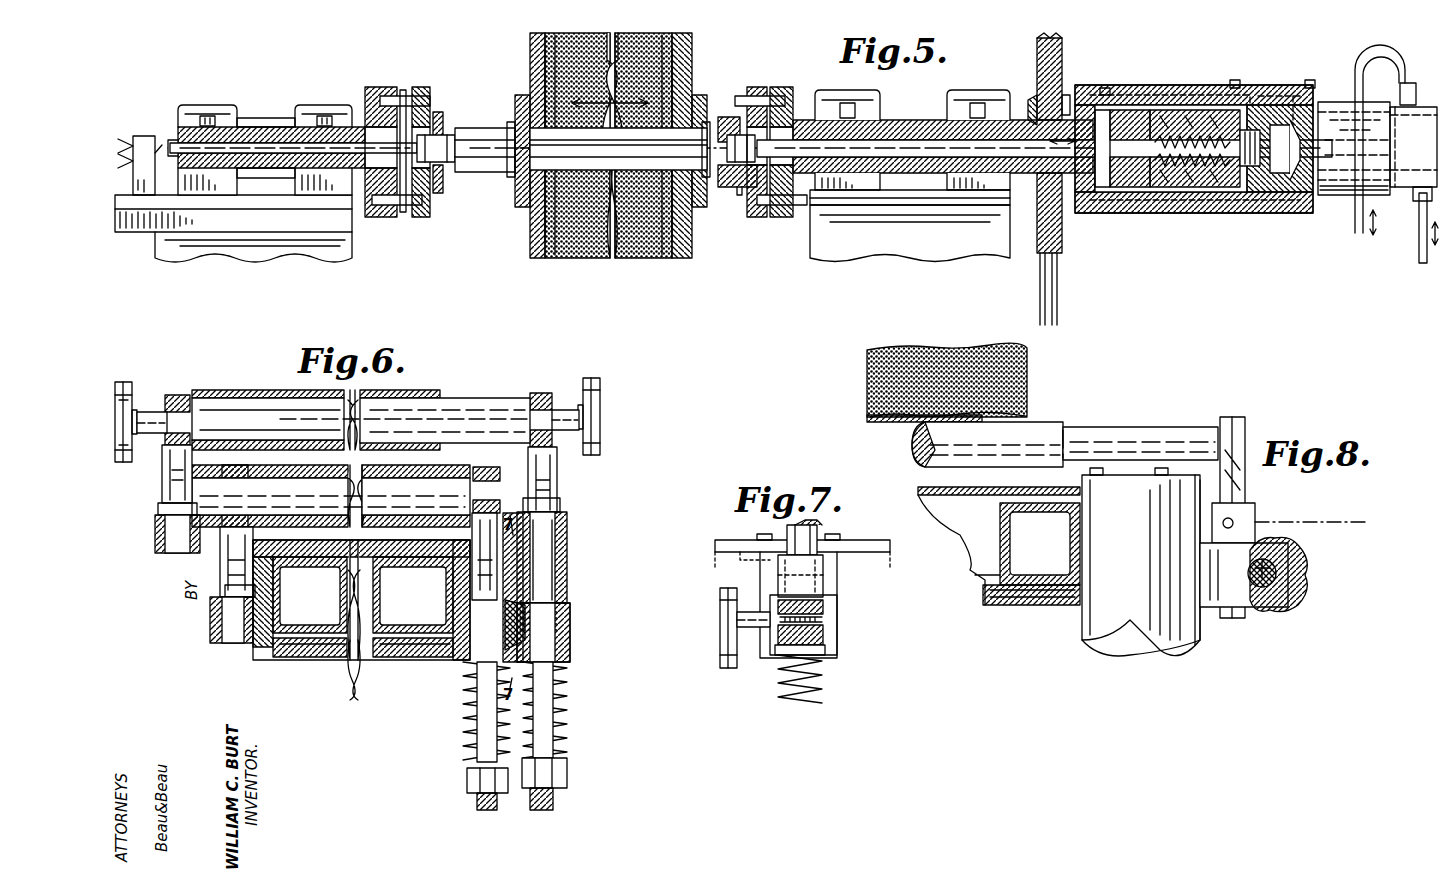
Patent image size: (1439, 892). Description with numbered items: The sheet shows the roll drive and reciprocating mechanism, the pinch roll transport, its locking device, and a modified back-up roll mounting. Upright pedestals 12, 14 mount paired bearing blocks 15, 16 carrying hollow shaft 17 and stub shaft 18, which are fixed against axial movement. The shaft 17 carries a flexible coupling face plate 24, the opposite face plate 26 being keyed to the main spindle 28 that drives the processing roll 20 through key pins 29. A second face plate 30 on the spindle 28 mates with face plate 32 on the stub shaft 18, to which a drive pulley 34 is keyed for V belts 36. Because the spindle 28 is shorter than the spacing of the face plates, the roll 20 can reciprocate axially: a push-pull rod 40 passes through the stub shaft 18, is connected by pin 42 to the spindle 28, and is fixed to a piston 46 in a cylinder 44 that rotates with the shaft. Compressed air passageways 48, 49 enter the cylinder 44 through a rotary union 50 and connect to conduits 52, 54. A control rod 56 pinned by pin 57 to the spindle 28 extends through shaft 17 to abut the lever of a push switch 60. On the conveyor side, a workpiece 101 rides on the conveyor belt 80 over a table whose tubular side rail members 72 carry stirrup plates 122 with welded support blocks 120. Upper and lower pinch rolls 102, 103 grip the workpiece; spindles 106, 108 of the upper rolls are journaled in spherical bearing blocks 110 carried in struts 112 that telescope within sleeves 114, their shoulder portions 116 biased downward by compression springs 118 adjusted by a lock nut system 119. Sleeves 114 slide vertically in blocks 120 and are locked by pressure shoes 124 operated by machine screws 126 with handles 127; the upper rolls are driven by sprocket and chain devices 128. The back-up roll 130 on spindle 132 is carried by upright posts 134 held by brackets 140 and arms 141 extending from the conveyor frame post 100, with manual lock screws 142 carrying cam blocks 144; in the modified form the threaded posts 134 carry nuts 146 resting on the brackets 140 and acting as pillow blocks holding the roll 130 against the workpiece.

In FIG. 5, the upright pedestal 12 is at (345, 243).
In FIG. 5, the upright pedestal 14 is at (893, 250).
In FIG. 5, the bearing block 15 is at (190, 105).
In FIG. 5, the bearing block 16 is at (834, 90).
In FIG. 5, the hollow shaft 17 is at (270, 127).
In FIG. 5, the stub shaft 18 is at (915, 120).
In FIG. 5, the processing roll 20 is at (626, 258).
In FIG. 8, the processing roll 20 is at (1027, 370).
In FIG. 5, the flexible coupling face plate 24 is at (392, 87).
In FIG. 5, the face plate 26 is at (418, 87).
In FIG. 5, the main spindle 28 is at (482, 128).
In FIG. 5, the key pins 29 is at (505, 175).
In FIG. 5, the flexible coupling face plate 30 is at (755, 87).
In FIG. 5, the face plate 32 is at (780, 87).
In FIG. 5, the drive pulley 34 is at (1062, 62).
In FIG. 5, the V belts 36 is at (1057, 297).
In FIG. 5, the push-pull rod 40 is at (830, 185).
In FIG. 5, the pin 42 is at (728, 117).
In FIG. 5, the cylinder 44 is at (1200, 213).
In FIG. 5, the piston 46 is at (1212, 110).
In FIG. 5, the compressed air passageway 48 is at (1255, 105).
In FIG. 5, the compressed air passageway 49 is at (1275, 210).
In FIG. 5, the rotary union 50 is at (1338, 195).
In FIG. 5, the conduit 52 is at (1355, 58).
In FIG. 5, the conduit 54 is at (1419, 250).
In FIG. 5, the control rod 56 is at (362, 143).
In FIG. 5, the pin 57 is at (438, 112).
In FIG. 5, the push switch 60 is at (146, 136).
In FIG. 6, the tubular side rail member 72 is at (300, 606).
In FIG. 8, the tubular side rail member 72 is at (1029, 575).
In FIG. 6, the conveyor belt 80 is at (363, 669).
In FIG. 8, the conveyor belt 80 is at (920, 487).
In FIG. 8, the conveyor frame post 100 is at (1090, 630).
In FIG. 6, the workpiece 101 is at (393, 440).
In FIG. 8, the workpiece 101 is at (885, 425).
In FIG. 6, the upper pinch roll 102 is at (468, 398).
In FIG. 6, the lower pinch roll 103 is at (442, 480).
In FIG. 6, the spindle 106 is at (570, 410).
In FIG. 6, the spindle 108 is at (232, 480).
In FIG. 6, the spherical bearing block 110 is at (166, 395).
In FIG. 6, the strut 112 is at (172, 462).
In FIG. 7, the strut 112 is at (817, 548).
In FIG. 6, the sleeve 114 is at (158, 527).
In FIG. 7, the sleeve 114 is at (823, 586).
In FIG. 6, the shoulder portion 116 is at (158, 505).
In FIG. 6, the compression spring 118 is at (467, 700).
In FIG. 7, the compression spring 118 is at (822, 694).
In FIG. 6, the lock nut system 119 is at (467, 782).
In FIG. 6, the support block 120 is at (572, 633).
In FIG. 7, the support block 120 is at (775, 655).
In FIG. 6, the stirrup plate 122 is at (500, 660).
In FIG. 7, the stirrup plate 122 is at (765, 555).
In FIG. 6, the pressure shoe 124 is at (570, 606).
In FIG. 7, the pressure shoe 124 is at (823, 638).
In FIG. 7, the machine screw 126 is at (823, 612).
In FIG. 7, the handle 127 is at (728, 668).
In FIG. 6, the sprocket and chain devices 128 is at (123, 382).
In FIG. 8, the back-up roll 130 is at (1040, 422).
In FIG. 8, the spindle 132 is at (1138, 427).
In FIG. 8, the upright post 134 is at (1245, 480).
In FIG. 8, the bracket 140 is at (1288, 545).
In FIG. 8, the arm 141 is at (1195, 512).
In FIG. 8, the manual lock screw 142 is at (1305, 570).
In FIG. 8, the cam block 144 is at (1275, 600).
In FIG. 8, the nut 146 is at (1255, 506).